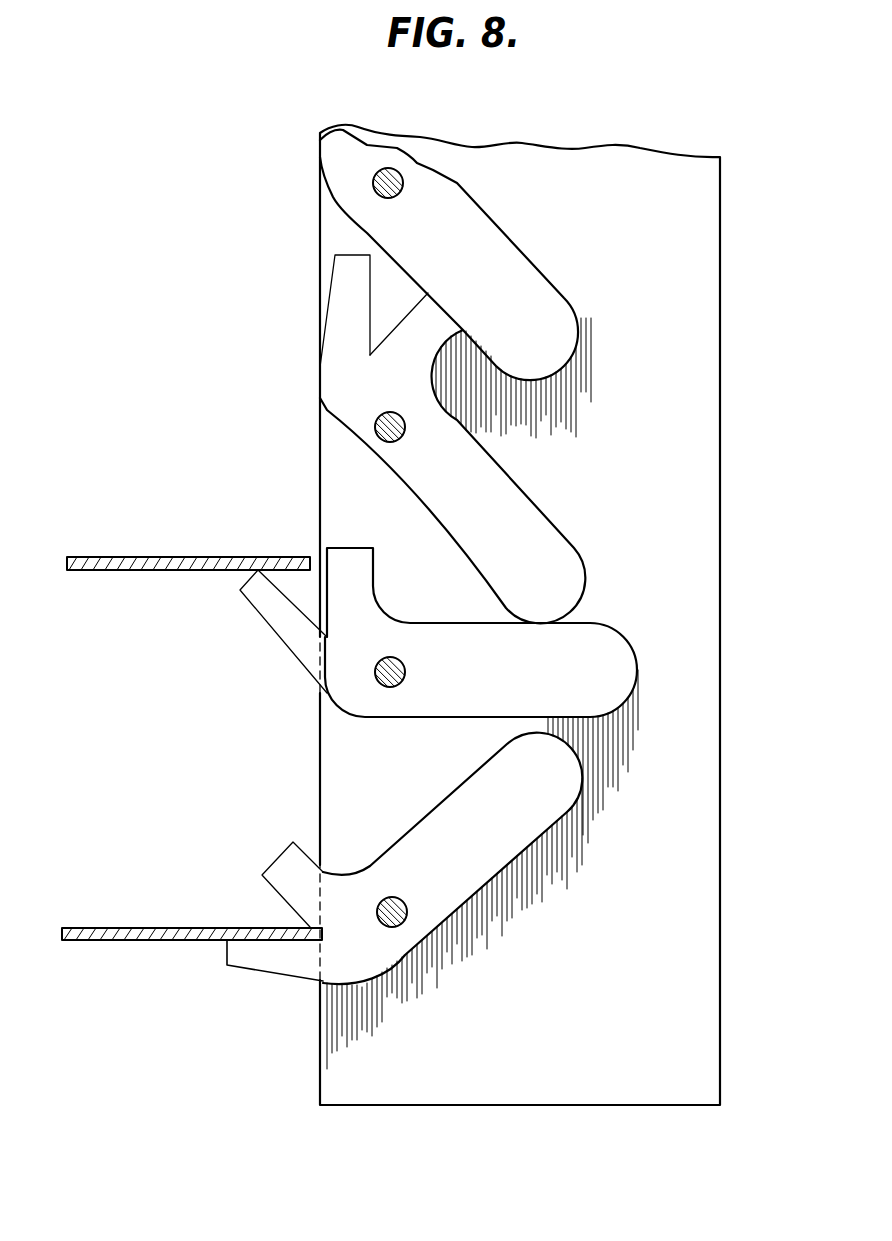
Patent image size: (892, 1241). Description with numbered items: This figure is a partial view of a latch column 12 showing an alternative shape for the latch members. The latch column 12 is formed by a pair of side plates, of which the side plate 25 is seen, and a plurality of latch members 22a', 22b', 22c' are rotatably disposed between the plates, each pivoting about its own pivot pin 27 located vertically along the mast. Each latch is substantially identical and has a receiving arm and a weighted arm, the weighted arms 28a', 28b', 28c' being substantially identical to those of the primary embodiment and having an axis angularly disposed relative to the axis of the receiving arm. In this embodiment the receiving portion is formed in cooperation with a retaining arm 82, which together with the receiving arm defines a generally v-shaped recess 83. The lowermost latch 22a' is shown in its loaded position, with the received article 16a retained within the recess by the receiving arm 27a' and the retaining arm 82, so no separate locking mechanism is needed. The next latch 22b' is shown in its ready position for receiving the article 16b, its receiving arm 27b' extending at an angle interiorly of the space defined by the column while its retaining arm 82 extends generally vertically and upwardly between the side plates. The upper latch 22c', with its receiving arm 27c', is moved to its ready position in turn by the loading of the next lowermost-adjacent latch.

The latch column 12 is at (687, 124).
The side plate 25 is at (707, 433).
The article 16a is at (125, 927).
The article 16b is at (128, 556).
The latch member 22a' is at (452, 901).
The latch member 22b' is at (423, 737).
The latch member 22c' is at (414, 377).
The pivot pin 27 is at (392, 928).
The receiving arm 27a' is at (275, 983).
The receiving arm 27b' is at (251, 631).
The receiving arm 27c' is at (308, 311).
The weighted arm 28a' is at (454, 923).
The weighted arm 28b' is at (570, 747).
The weighted arm 28c' is at (513, 434).
The retaining arm 82 is at (363, 573).
The v-shaped recess 83 is at (400, 306).